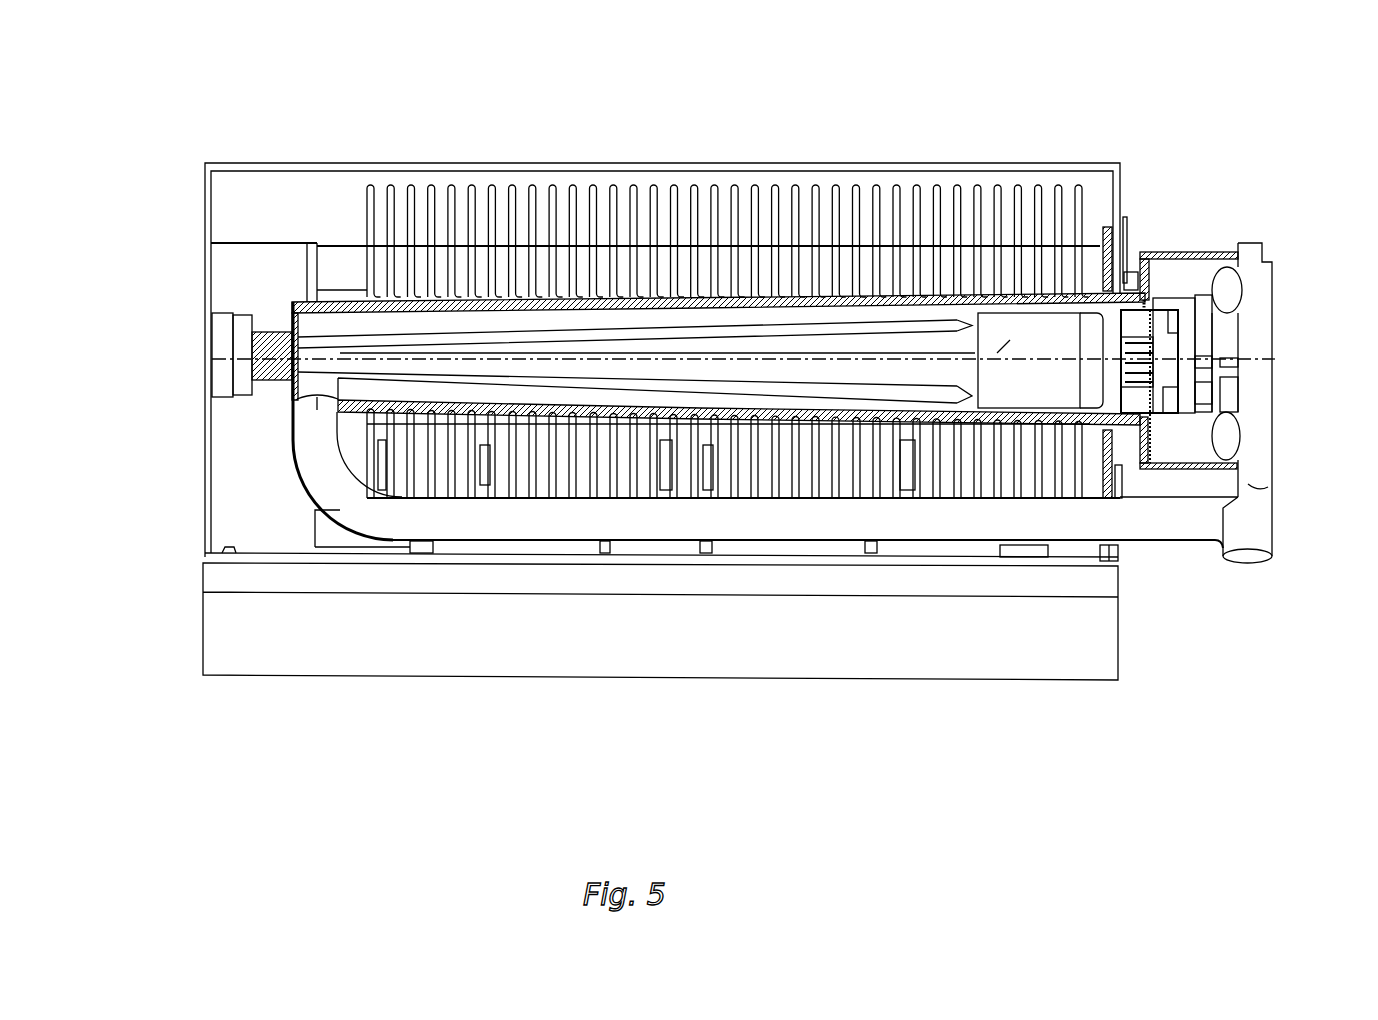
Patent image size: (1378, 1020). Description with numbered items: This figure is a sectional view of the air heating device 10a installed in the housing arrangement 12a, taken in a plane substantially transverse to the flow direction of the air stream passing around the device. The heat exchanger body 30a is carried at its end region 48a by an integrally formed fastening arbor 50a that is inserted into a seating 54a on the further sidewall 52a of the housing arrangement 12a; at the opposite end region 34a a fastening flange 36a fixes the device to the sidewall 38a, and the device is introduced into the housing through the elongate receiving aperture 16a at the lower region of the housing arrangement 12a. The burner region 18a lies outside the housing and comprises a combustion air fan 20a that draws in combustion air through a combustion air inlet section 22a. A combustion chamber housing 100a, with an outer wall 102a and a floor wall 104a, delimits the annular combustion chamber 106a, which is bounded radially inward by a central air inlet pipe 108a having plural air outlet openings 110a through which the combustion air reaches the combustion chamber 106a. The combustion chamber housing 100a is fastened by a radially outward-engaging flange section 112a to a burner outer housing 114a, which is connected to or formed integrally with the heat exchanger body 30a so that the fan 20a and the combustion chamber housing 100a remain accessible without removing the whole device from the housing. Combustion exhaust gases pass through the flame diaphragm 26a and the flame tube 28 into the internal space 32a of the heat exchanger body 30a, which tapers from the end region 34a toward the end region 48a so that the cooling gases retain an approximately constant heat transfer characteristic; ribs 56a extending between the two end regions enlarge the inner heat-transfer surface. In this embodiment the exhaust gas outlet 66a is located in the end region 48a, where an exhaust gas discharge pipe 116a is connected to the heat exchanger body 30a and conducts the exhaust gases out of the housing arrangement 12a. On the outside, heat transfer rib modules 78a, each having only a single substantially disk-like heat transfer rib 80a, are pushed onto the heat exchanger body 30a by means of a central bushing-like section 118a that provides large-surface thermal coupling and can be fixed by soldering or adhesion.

The air heating device 10a is at (453, 626).
The housing arrangement 12a is at (655, 165).
The receiving aperture 16a is at (230, 549).
The burner region 18a is at (1283, 653).
The combustion air fan 20a is at (1258, 385).
The combustion air inlet section 22a is at (1269, 526).
The flame diaphragm 26a is at (988, 503).
The flame tube 28 is at (1010, 312).
The heat exchanger body 30a is at (733, 298).
The internal space 32a is at (864, 344).
The end region 34a is at (1138, 194).
The fastening flange 36a is at (1066, 428).
The sidewall 38a is at (1115, 561).
The end region 48a is at (306, 300).
The fastening arbor 50a is at (268, 383).
The further sidewall 52a is at (206, 247).
The seating 54a is at (212, 342).
The ribs 56a is at (570, 325).
The exhaust gas outlet 66a is at (280, 434).
The heat transfer rib modules 78a is at (405, 194).
The heat transfer rib 80a is at (370, 186).
The combustion chamber housing 100a is at (1168, 311).
The outer wall 102a is at (1136, 272).
The floor wall 104a is at (1167, 333).
The combustion chamber 106a is at (1150, 468).
The central air inlet pipe 108a is at (1160, 382).
The air outlet openings 110a is at (1175, 353).
The flange section 112a is at (1108, 425).
The burner outer housing 114a is at (1215, 258).
The exhaust gas discharge pipe 116a is at (545, 557).
The bushing-like section 118a is at (378, 296).